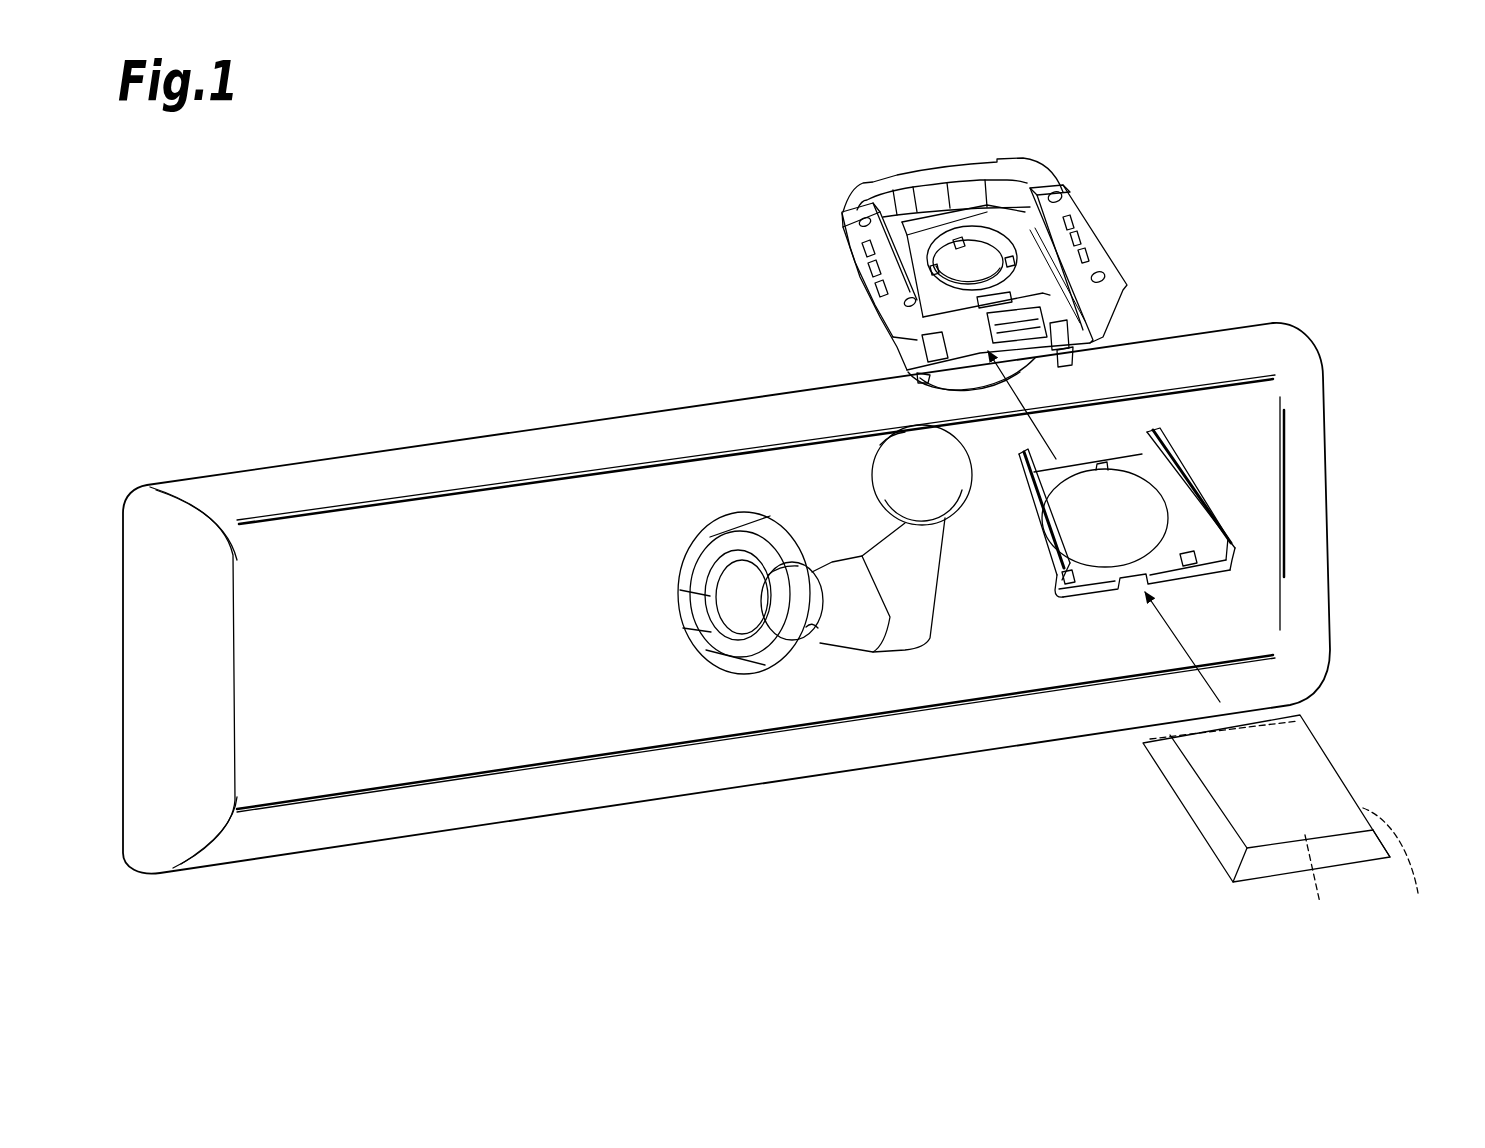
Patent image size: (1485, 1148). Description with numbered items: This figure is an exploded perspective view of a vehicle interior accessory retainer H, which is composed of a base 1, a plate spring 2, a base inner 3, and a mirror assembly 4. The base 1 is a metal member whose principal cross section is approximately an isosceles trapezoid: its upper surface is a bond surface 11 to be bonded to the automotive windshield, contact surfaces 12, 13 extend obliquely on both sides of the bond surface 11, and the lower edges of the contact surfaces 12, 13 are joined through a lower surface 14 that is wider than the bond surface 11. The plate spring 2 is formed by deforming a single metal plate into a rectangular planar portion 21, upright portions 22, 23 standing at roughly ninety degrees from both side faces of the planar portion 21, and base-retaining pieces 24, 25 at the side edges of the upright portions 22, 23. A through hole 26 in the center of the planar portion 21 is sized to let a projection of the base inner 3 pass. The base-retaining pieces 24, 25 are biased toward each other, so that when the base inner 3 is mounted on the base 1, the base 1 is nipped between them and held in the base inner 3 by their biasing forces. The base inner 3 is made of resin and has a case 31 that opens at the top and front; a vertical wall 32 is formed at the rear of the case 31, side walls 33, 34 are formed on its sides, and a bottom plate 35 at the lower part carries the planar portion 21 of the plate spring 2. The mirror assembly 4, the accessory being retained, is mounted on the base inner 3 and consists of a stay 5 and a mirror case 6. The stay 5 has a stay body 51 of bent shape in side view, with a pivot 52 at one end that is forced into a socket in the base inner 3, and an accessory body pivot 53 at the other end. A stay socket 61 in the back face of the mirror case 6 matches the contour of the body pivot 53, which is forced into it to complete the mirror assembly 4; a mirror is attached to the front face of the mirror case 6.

The base 1 is at (1297, 793).
The bond surface 11 is at (1327, 805).
The contact surface 12 is at (1207, 827).
The contact surface 13 is at (1413, 870).
The lower surface 14 is at (1318, 891).
The plate spring 2 is at (1116, 526).
The planar portion 21 is at (1132, 531).
The upright portion 22 is at (1042, 560).
The upright portion 23 is at (1223, 570).
The base-retaining piece 24 is at (1042, 514).
The base-retaining piece 25 is at (1208, 521).
The through hole 26 is at (1101, 476).
The base inner 3 is at (993, 220).
The case 31 is at (1025, 160).
The vertical wall 32 is at (935, 187).
The side wall 33 is at (857, 278).
The side wall 34 is at (1070, 257).
The bottom plate 35 is at (1058, 307).
The mirror assembly 4 is at (772, 420).
The stay 5 is at (891, 572).
The stay body 51 is at (908, 620).
The pivot 52 is at (905, 455).
The accessory body pivot 53 is at (790, 590).
The mirror case 6 is at (672, 708).
The stay socket 61 is at (740, 607).
The vehicle interior accessory retainer H is at (1223, 197).